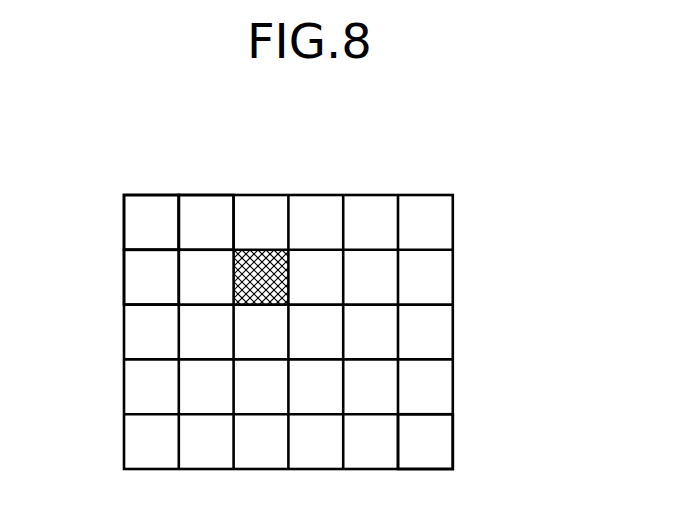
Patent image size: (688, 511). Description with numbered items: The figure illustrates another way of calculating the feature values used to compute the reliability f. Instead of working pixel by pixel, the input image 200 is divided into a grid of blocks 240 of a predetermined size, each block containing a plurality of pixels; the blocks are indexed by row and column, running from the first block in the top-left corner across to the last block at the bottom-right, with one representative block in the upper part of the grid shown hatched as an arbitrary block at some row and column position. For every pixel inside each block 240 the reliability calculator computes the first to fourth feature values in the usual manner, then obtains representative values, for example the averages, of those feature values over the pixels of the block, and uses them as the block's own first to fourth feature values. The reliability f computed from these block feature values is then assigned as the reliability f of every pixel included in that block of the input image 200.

The input image 200 is at (424, 195).
The block 240 is at (272, 260).